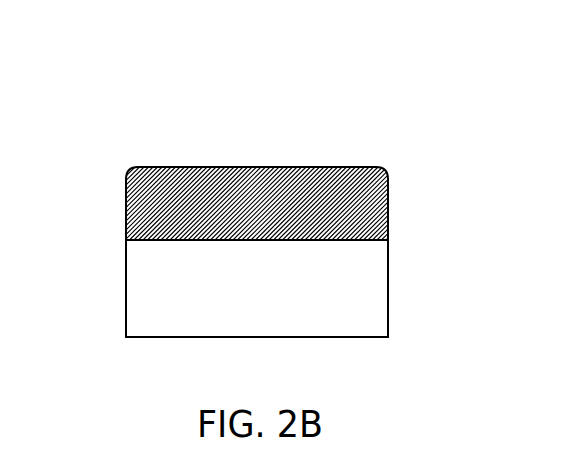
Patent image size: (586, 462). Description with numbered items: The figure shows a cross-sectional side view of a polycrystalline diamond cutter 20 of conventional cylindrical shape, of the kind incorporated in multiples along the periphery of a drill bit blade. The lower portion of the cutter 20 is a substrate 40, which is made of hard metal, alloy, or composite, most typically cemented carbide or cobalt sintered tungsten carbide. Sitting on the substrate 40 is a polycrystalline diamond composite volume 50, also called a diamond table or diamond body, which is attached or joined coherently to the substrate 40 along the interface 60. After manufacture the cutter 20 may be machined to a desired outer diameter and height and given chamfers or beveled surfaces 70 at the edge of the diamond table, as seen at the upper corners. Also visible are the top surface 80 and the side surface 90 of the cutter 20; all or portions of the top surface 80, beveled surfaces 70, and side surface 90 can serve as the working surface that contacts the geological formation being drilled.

The polycrystalline diamond cutter 20 is at (245, 212).
The substrate 40 is at (365, 283).
The polycrystalline diamond composite volume 50 is at (180, 187).
The interface 60 is at (127, 240).
The chamfers or beveled surfaces 70 is at (128, 172).
The top surface 80 is at (298, 168).
The side surface 90 is at (125, 199).